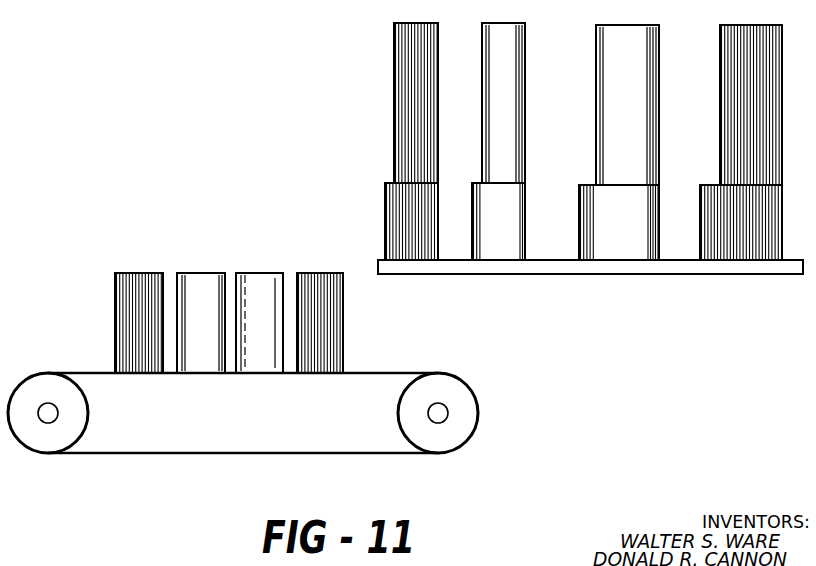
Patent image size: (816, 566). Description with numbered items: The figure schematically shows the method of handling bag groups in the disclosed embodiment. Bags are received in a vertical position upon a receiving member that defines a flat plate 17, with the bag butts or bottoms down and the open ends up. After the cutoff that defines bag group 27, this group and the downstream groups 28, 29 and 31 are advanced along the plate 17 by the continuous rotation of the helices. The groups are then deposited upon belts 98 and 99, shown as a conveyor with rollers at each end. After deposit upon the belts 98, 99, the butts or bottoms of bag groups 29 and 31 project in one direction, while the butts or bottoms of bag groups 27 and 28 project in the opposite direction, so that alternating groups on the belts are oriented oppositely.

The flat plate 17 is at (549, 275).
The bag group 27 is at (327, 273).
The bag group 28 is at (263, 273).
The bag group 29 is at (185, 273).
The bag group 31 is at (136, 273).
The belt 98 is at (243, 435).
The belt 99 is at (209, 455).